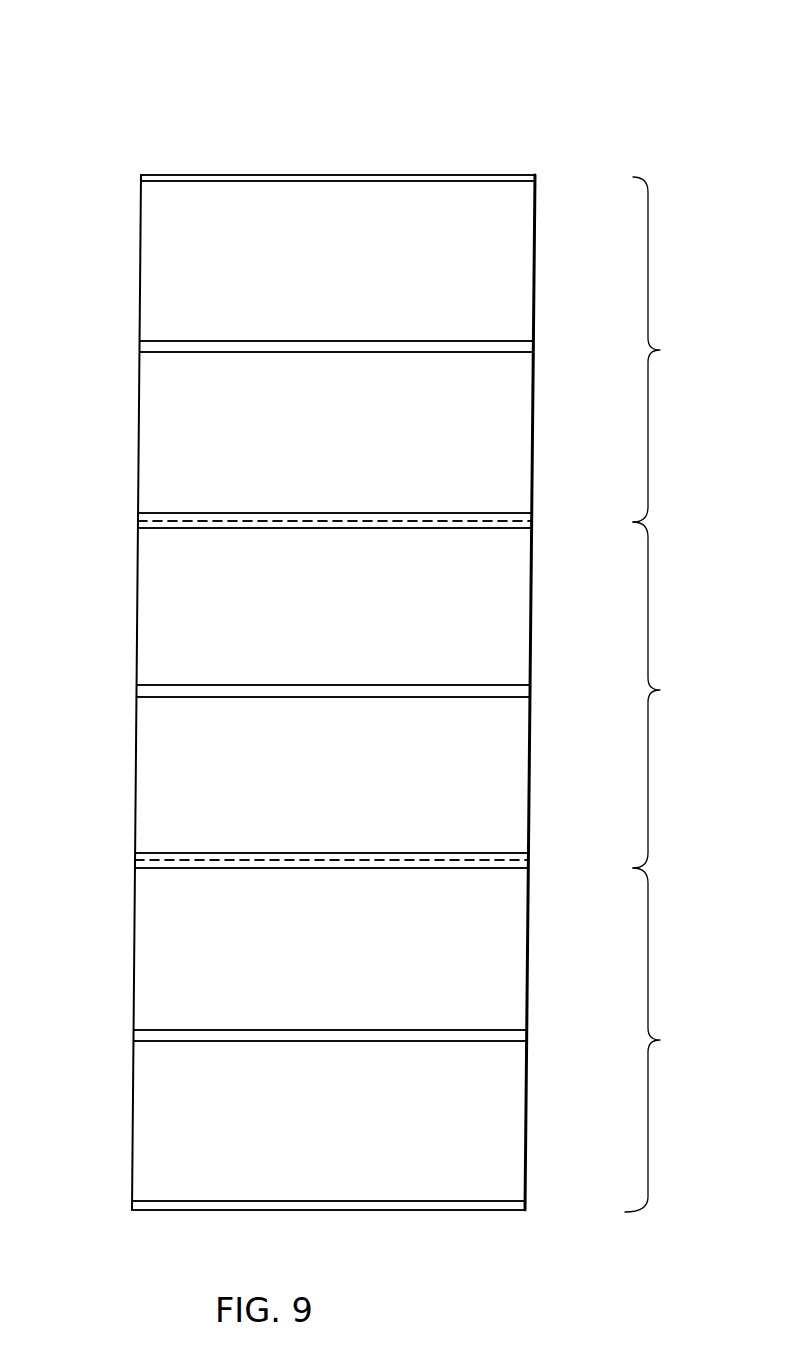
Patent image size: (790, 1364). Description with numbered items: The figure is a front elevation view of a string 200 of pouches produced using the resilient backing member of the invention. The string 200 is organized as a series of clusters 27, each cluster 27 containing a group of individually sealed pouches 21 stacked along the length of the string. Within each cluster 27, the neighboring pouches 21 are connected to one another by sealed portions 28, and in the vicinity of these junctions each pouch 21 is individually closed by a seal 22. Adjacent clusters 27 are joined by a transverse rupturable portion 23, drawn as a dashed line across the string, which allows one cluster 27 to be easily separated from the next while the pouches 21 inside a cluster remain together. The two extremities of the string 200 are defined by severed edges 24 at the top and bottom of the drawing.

The string 200 is at (462, 55).
The severed edges 24 is at (253, 175).
The pouches 21 is at (513, 248).
The seal 22 is at (533, 341).
The sealed portions 28 is at (118, 355).
The transverse rupturable portion 23 is at (118, 529).
The clusters 27 is at (670, 694).